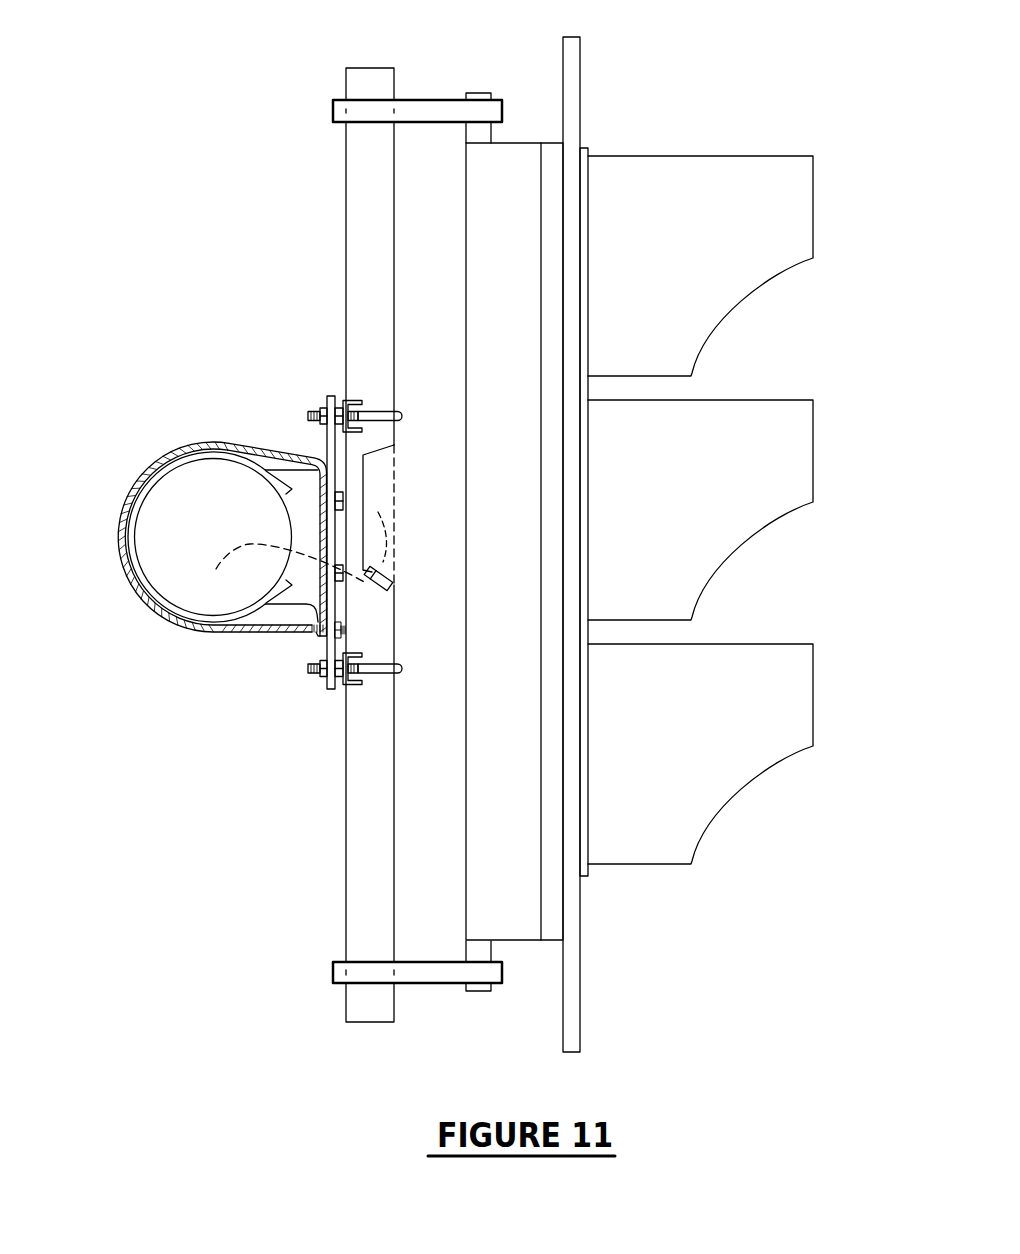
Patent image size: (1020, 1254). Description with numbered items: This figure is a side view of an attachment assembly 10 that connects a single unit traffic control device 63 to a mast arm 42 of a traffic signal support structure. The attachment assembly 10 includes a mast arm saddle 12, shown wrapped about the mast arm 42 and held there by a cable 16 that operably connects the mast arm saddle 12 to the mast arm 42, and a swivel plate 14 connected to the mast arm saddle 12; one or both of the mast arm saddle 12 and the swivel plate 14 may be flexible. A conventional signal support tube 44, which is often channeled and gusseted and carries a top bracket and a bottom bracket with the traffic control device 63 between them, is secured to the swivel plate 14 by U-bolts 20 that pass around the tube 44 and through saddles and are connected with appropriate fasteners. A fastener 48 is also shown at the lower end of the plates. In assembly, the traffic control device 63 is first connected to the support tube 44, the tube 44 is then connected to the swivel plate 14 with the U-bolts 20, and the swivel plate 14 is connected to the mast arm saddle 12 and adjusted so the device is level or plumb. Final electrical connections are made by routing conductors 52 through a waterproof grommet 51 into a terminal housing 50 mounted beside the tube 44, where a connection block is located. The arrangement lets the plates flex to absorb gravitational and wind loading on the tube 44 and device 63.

The attachment assembly 10 is at (110, 393).
The mast arm saddle 12 is at (308, 588).
The swivel plate 14 is at (330, 681).
The cable 16 is at (267, 450).
The U-bolt 20 is at (382, 415).
The mast arm 42 is at (180, 552).
The signal support tube 44 is at (357, 250).
The bolt 48 is at (343, 683).
The terminal housing 50 is at (382, 484).
The waterproof grommet 51 is at (393, 570).
The conductors 52 is at (237, 548).
The traffic control device 63 is at (668, 66).